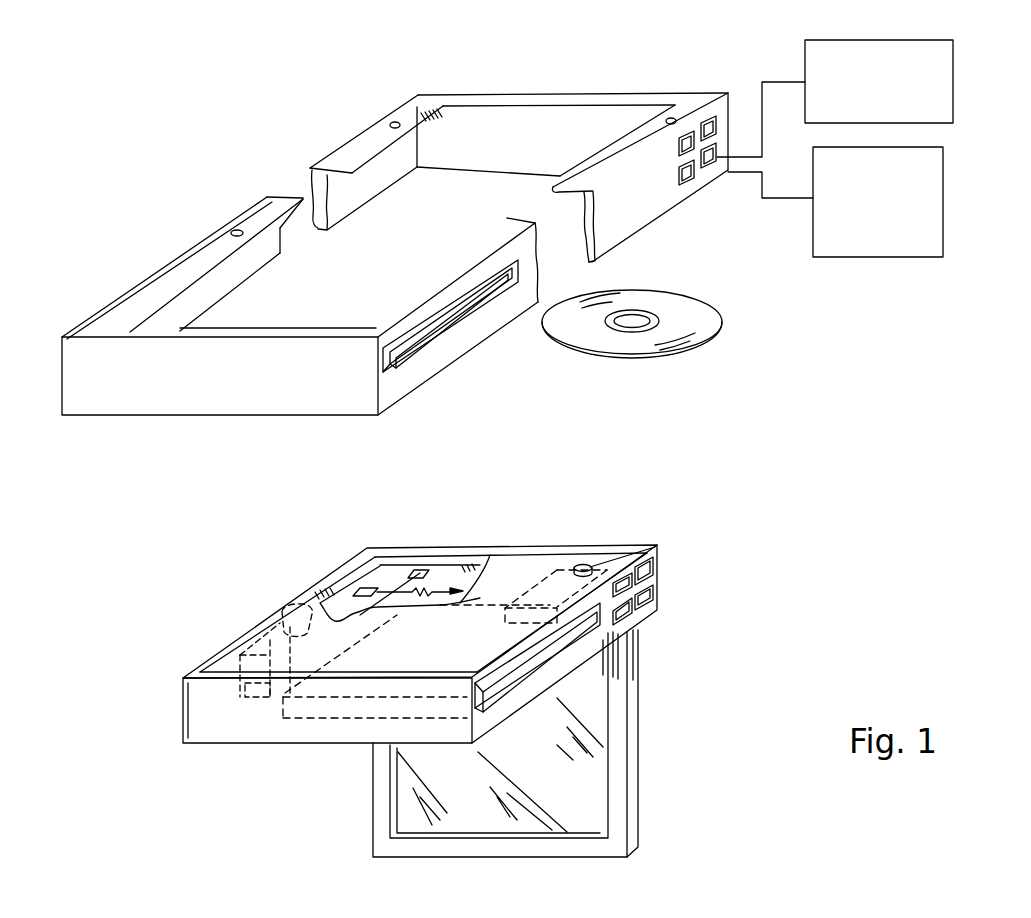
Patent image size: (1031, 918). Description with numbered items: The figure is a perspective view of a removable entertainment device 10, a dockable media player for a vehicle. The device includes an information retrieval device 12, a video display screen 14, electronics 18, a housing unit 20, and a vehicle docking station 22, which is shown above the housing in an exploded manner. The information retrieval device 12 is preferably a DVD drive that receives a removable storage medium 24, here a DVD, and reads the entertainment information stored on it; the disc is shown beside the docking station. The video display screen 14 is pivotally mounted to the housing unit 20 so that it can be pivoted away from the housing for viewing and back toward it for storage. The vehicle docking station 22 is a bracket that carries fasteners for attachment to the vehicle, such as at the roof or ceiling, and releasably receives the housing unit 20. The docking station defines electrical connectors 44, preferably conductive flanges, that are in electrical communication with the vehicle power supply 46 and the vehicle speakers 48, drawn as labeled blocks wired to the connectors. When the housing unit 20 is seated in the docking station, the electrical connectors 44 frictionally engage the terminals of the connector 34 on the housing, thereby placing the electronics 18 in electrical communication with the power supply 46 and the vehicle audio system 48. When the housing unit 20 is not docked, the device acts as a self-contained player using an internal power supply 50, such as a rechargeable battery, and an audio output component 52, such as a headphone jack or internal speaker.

The removable entertainment device 10 is at (285, 752).
The information retrieval device 12 is at (417, 652).
The video display screen 14 is at (637, 790).
The electronics 18 is at (390, 597).
The housing unit 20 is at (254, 716).
The vehicle docking station 22 is at (440, 368).
The removable storage medium 24 is at (690, 352).
The connector 34 is at (672, 572).
The electrical connectors 44 is at (659, 108).
The power supply 46 is at (943, 220).
The speakers 48 is at (953, 95).
The internal power supply 50 is at (550, 587).
The audio output component 52 is at (583, 563).